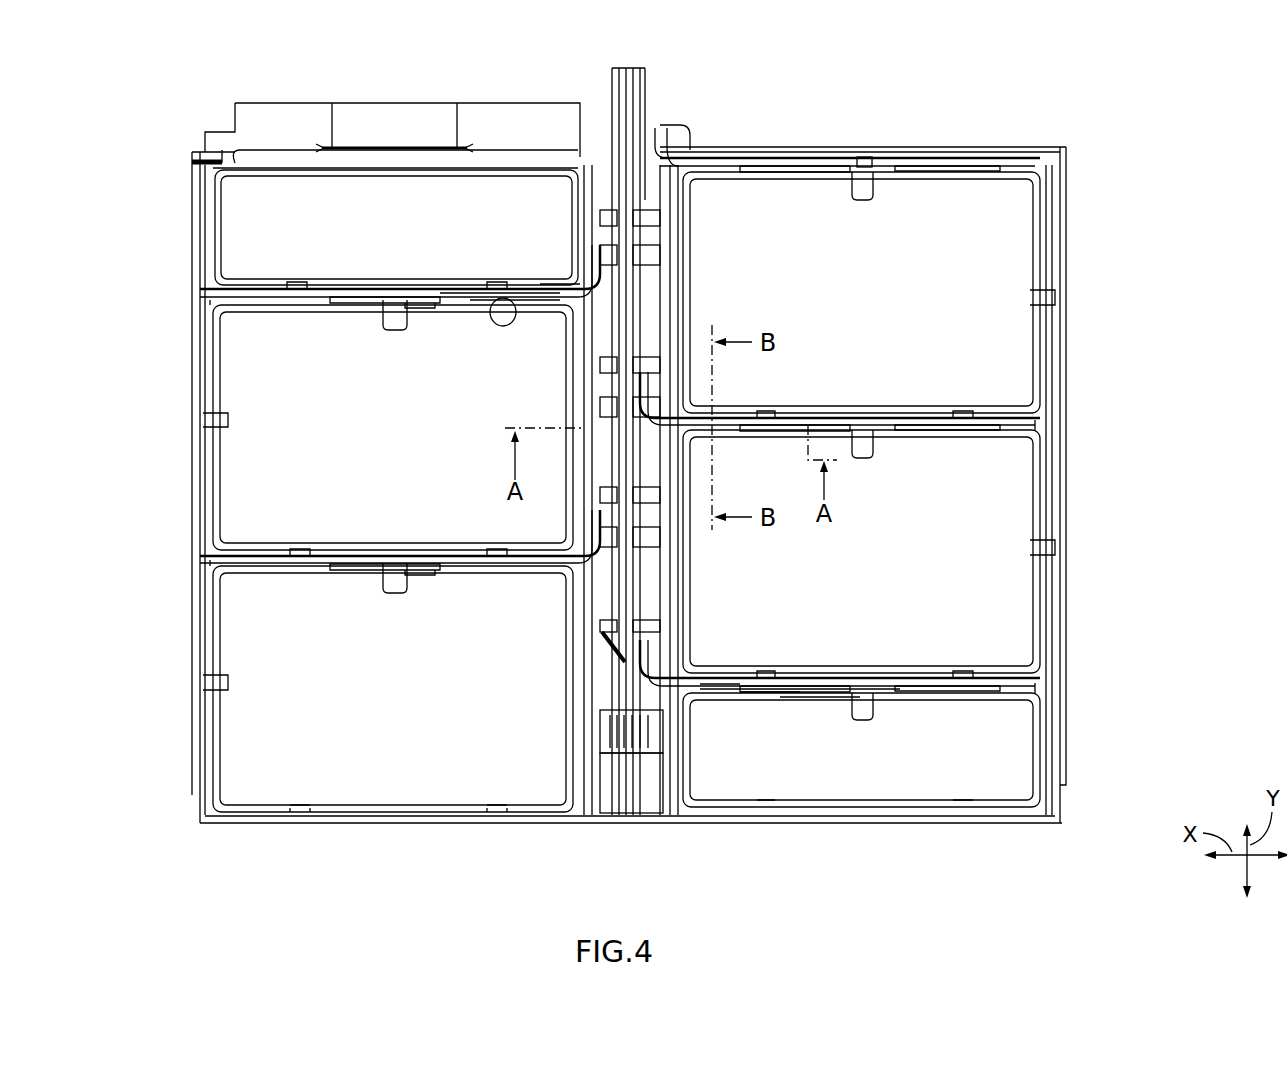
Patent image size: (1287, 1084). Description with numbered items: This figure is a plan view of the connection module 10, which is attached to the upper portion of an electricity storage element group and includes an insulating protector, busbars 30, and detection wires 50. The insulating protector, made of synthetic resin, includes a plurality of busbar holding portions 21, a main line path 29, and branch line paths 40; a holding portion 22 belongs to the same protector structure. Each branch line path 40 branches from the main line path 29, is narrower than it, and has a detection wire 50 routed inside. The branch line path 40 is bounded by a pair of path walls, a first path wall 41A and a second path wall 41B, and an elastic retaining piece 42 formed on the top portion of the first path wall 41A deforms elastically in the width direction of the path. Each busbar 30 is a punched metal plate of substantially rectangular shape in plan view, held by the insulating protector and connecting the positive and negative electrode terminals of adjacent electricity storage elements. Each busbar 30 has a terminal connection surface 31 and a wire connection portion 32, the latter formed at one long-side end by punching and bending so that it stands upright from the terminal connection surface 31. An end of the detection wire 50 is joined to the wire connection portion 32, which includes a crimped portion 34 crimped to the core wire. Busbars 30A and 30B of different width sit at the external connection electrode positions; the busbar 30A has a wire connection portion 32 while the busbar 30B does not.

The connection module 10 is at (617, 875).
The busbar holding portion 21 is at (1074, 191).
The partition wall 22 is at (258, 292).
The main line path 29 is at (657, 147).
The busbar 30 is at (243, 482).
The busbar 30A is at (1013, 768).
The busbar 30B is at (243, 211).
The terminal connection surface 31 is at (285, 410).
The wire connection portion 32 is at (345, 300).
The crimped portion 34 is at (865, 162).
The branch line path 40 is at (806, 702).
The first path wall 41A is at (460, 297).
The second path wall 41B is at (490, 300).
The elastic retaining piece 42 is at (548, 290).
The detection wire 50 is at (428, 295).